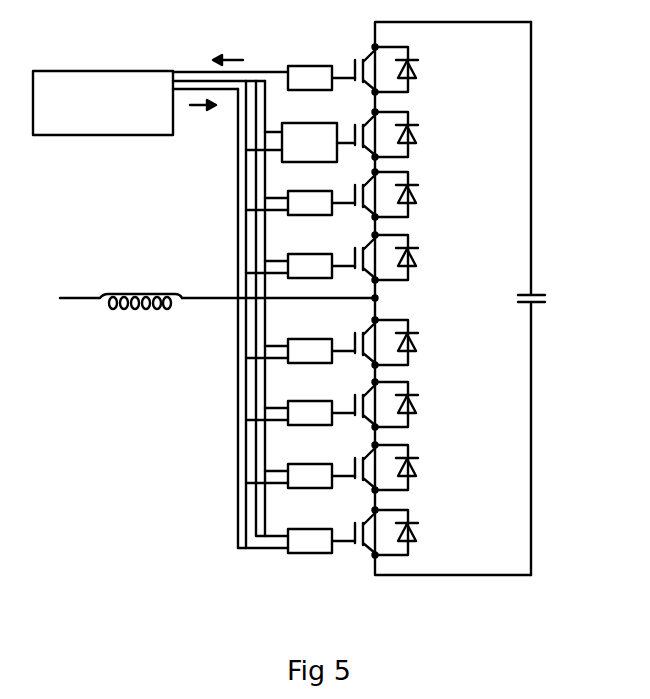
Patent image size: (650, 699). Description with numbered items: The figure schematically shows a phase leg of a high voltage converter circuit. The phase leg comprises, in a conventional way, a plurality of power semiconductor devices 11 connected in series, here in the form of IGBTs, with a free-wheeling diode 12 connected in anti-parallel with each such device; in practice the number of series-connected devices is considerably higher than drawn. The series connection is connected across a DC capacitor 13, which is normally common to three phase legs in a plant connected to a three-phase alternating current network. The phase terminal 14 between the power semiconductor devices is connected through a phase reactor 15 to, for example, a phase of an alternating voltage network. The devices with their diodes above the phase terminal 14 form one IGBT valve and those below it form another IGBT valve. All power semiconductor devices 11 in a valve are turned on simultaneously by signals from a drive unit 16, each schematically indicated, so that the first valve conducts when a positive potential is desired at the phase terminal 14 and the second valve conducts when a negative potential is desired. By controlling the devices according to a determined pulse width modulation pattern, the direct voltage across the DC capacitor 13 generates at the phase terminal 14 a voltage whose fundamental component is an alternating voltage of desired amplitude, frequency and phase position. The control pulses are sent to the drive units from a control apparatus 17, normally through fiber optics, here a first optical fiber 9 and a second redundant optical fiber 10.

The first optical fiber 9 is at (238, 351).
The second redundant optical fiber 10 is at (258, 388).
The power semiconductor device 11 is at (355, 125).
The free-wheeling diode 12 is at (418, 133).
The DC capacitor 13 is at (537, 294).
The phase terminal 14 is at (378, 298).
The phase reactor 15 is at (142, 292).
The drive unit 16 is at (320, 155).
The control apparatus 17 is at (125, 71).